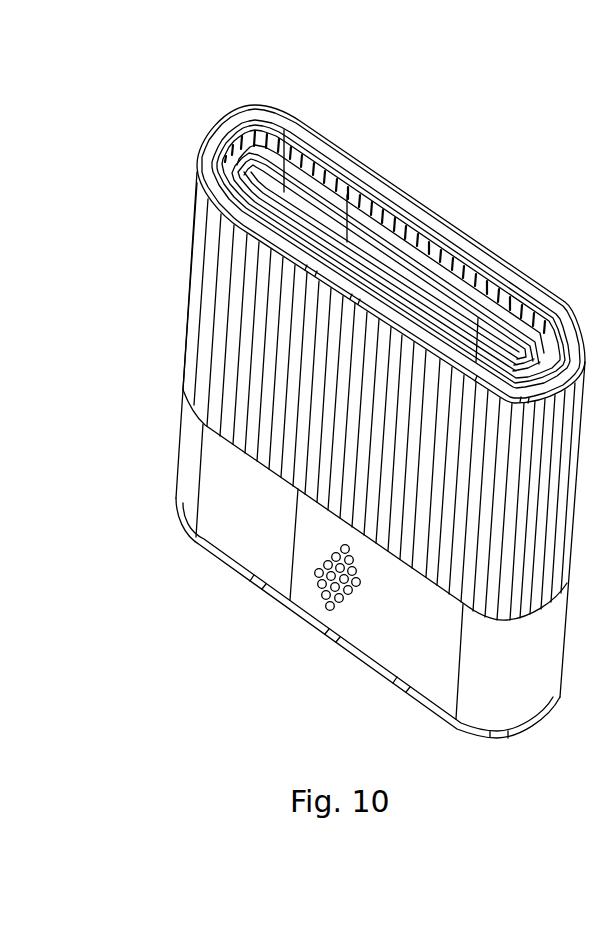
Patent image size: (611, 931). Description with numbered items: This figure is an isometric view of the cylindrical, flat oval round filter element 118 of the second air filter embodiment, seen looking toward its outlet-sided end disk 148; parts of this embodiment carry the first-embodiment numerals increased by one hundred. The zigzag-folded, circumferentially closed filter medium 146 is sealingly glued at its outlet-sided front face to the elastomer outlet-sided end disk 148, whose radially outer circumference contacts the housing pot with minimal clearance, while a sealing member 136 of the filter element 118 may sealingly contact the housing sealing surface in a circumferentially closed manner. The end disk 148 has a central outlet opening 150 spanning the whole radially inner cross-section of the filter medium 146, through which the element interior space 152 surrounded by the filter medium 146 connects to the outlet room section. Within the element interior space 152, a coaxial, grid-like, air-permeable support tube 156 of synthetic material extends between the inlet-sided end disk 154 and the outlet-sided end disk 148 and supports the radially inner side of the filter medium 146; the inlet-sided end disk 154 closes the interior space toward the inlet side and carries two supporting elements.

The filter element 118 is at (488, 115).
The sealing member 136 is at (210, 148).
The outlet-sided end disk 148 is at (210, 200).
The filter medium 146 is at (223, 313).
The outlet opening 150 is at (353, 197).
The element interior space 152 is at (460, 312).
The inlet-sided end disk 154 is at (367, 661).
The support tube 156 is at (258, 162).